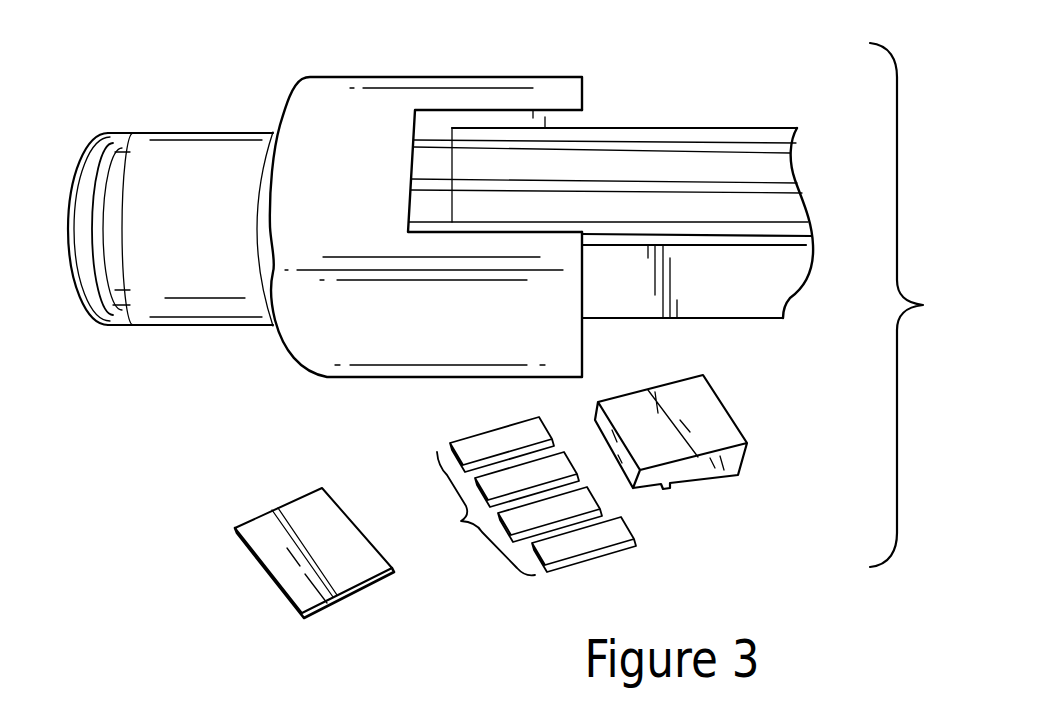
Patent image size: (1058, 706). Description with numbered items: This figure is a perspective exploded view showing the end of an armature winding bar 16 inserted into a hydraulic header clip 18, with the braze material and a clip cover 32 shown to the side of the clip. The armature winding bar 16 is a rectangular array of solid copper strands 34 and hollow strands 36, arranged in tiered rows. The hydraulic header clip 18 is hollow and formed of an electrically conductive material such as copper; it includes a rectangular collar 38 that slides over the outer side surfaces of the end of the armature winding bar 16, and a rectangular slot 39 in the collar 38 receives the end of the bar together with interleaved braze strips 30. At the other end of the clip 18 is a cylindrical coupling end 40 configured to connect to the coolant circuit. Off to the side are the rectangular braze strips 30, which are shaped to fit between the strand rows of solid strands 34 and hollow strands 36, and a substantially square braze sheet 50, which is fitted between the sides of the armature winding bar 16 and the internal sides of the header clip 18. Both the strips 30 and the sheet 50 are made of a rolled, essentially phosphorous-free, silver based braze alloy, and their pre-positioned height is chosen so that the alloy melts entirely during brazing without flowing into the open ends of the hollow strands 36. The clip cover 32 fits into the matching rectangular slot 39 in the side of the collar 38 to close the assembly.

The armature winding bar 16 is at (666, 305).
The hydraulic header clip 18 is at (394, 207).
The braze strips 30 is at (536, 496).
The clip cover 32 is at (730, 435).
The solid copper strands 34 is at (782, 205).
The hollow strands 36 is at (790, 148).
The rectangular collar 38 is at (329, 138).
The rectangular slot 39 is at (413, 128).
The cylindrical coupling end 40 is at (210, 277).
The braze sheet 50 is at (301, 517).